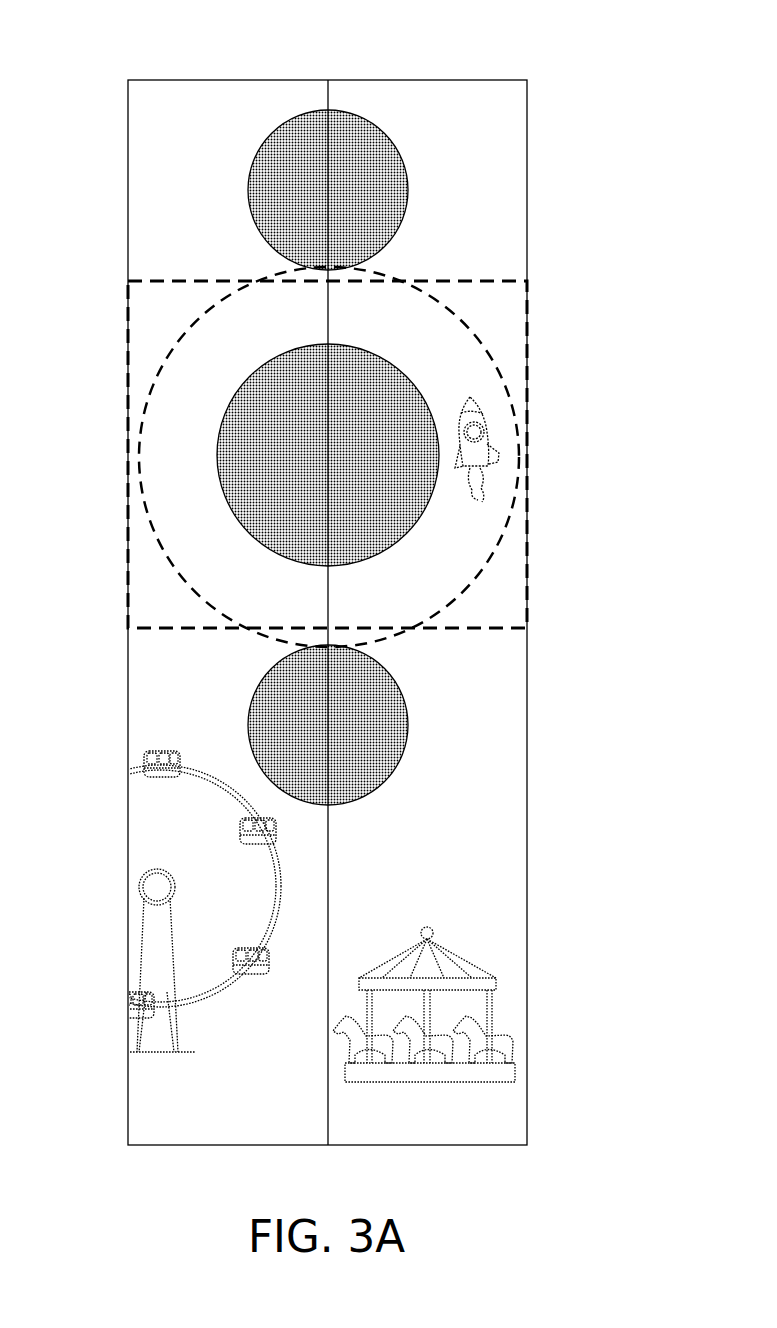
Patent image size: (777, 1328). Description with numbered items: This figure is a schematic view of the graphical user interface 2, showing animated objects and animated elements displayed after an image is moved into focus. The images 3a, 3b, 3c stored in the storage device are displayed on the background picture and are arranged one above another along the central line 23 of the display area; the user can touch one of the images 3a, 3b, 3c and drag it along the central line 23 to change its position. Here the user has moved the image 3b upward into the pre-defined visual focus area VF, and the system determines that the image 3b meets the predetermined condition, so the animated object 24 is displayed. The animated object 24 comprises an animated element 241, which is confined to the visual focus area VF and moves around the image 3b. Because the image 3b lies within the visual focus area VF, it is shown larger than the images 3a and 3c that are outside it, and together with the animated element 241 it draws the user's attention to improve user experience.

The graphical user interface 2 is at (27, 31).
The central line 23 is at (328, 95).
The animated object 24 is at (163, 551).
The animated element 241 is at (474, 432).
The image 3a is at (255, 155).
The image 3b is at (245, 378).
The image 3c is at (255, 684).
The visual focus area VF is at (470, 628).